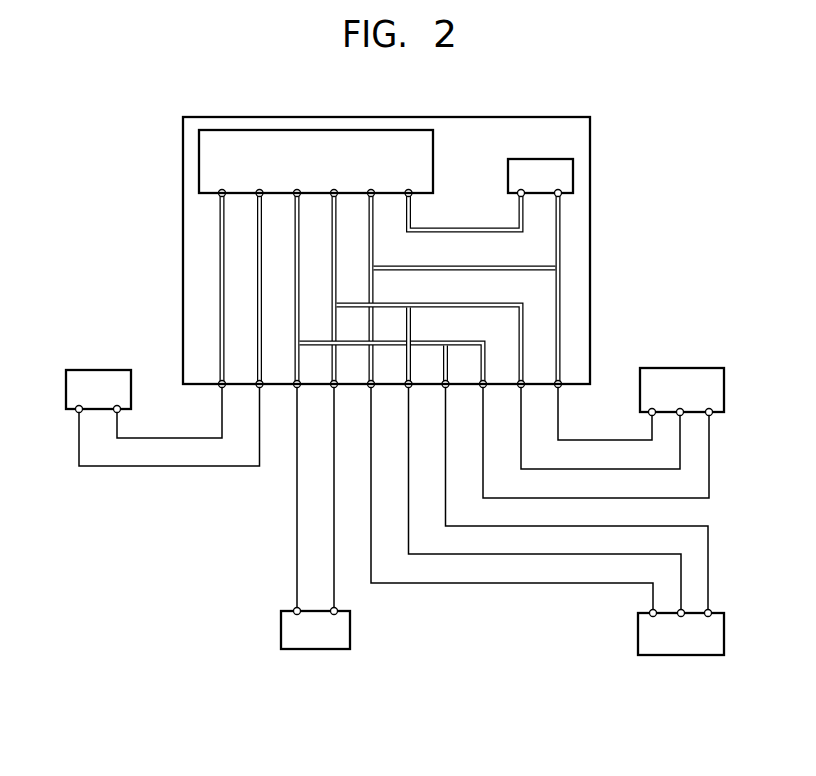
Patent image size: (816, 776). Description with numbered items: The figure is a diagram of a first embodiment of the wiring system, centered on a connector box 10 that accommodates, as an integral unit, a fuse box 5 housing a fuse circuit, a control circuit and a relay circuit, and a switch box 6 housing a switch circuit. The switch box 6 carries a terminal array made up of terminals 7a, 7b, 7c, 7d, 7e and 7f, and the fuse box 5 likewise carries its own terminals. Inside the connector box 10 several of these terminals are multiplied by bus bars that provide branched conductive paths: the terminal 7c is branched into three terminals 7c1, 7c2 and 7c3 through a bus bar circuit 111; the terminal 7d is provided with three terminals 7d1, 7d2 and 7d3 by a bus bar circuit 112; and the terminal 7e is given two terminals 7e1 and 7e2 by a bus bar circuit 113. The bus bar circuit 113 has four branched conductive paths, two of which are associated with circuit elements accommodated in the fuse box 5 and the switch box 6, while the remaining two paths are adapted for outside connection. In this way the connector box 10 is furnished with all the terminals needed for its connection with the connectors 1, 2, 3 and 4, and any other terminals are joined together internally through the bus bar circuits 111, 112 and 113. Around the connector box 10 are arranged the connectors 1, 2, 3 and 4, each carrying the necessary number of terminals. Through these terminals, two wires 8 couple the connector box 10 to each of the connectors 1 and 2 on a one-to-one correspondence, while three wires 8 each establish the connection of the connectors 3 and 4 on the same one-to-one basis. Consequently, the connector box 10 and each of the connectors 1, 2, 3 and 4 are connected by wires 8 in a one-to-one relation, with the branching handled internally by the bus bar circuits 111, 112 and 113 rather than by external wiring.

The connector 1 is at (98, 391).
The connector 2 is at (315, 629).
The connector 3 is at (681, 633).
The connector 4 is at (682, 392).
The fuse box 5 is at (540, 178).
The switch box 6 is at (316, 161).
The connector box 10 is at (386, 250).
The wires 8 is at (155, 438).
The terminal 7a is at (217, 279).
The terminal 7b is at (255, 279).
The terminal 7c is at (299, 277).
The terminal 7d is at (337, 277).
The terminal 7e is at (373, 277).
The terminal 7f is at (461, 200).
The branched terminal 7c1 is at (286, 376).
The branched terminal 7d1 is at (323, 376).
The branched terminal 7e1 is at (360, 376).
The branched terminal 7d2 is at (395, 348).
The branched terminal 7c2 is at (432, 367).
The branched terminal 7c3 is at (470, 376).
The branched terminal 7d3 is at (508, 376).
The branched terminal 7e2 is at (545, 290).
The bus bar circuit 111 is at (294, 314).
The bus bar circuit 112 is at (332, 270).
The bus bar circuit 113 is at (371, 226).